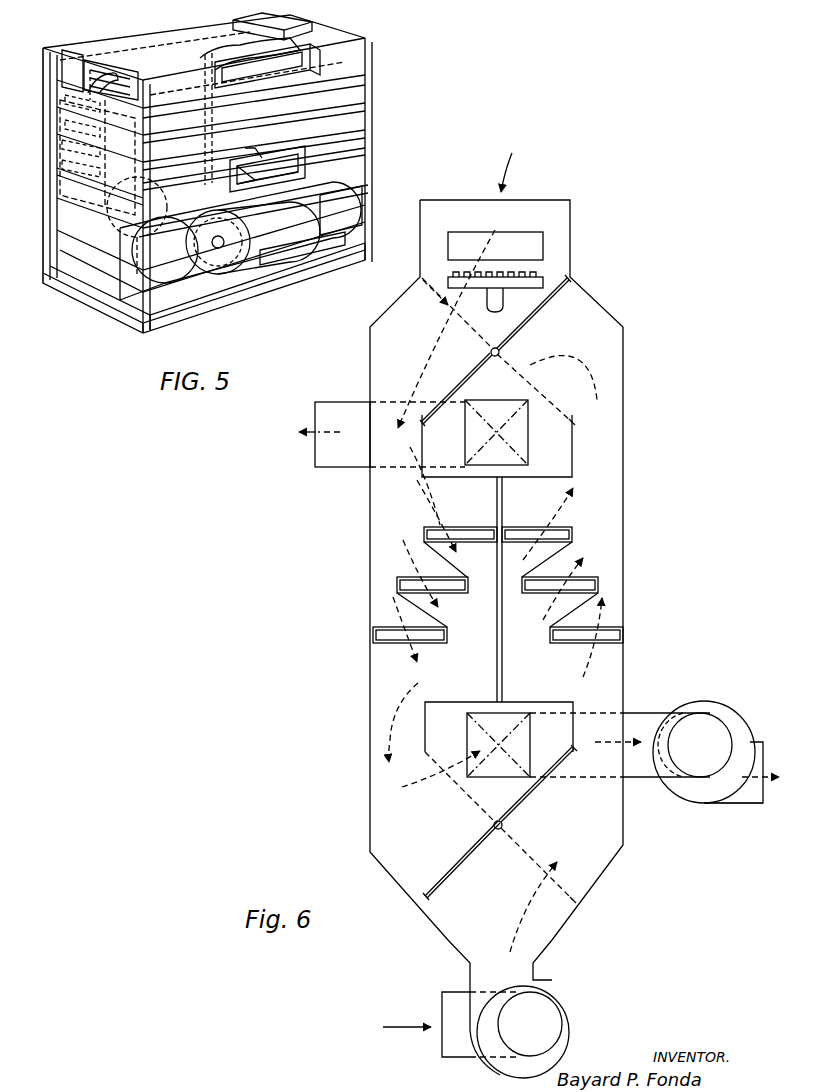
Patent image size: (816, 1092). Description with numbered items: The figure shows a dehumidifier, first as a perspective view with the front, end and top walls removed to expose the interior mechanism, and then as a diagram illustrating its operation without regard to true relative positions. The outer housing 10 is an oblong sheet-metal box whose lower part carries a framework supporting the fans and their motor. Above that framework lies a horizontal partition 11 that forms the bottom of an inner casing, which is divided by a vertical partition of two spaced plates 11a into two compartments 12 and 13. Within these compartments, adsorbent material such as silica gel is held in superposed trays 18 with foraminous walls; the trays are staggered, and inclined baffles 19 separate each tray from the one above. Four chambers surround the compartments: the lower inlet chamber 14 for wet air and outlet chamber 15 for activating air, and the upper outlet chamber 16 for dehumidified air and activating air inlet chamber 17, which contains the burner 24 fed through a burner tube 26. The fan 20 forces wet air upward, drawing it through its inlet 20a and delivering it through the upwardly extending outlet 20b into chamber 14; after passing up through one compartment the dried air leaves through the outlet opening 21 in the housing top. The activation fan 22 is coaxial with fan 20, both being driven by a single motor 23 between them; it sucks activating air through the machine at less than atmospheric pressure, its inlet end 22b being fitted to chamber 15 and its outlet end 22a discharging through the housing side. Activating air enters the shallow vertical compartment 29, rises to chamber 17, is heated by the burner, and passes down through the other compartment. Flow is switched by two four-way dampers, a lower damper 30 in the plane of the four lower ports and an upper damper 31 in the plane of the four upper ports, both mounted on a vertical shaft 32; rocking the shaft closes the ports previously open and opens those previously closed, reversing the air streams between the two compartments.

In FIG. 5, the outer housing 10 is at (358, 188).
In FIG. 5, the horizontal partition 11 is at (350, 173).
In FIG. 5, the vertical partition plates 11a is at (62, 167).
In FIG. 6, the vertical partition plates 11a is at (504, 674).
In FIG. 5, the compartment 12 is at (58, 65).
In FIG. 6, the compartment 12 is at (618, 506).
In FIG. 5, the compartment 13 is at (108, 176).
In FIG. 6, the compartment 13 is at (372, 511).
In FIG. 5, the inlet chamber 14 is at (308, 162).
In FIG. 6, the inlet chamber 14 is at (497, 438).
In FIG. 5, the outlet chamber 15 is at (60, 195).
In FIG. 5, the outlet chamber 16 is at (322, 62).
In FIG. 6, the outlet chamber 16 is at (495, 272).
In FIG. 5, the activating air inlet chamber 17 is at (62, 84).
In FIG. 5, the trays 18 is at (62, 107).
In FIG. 6, the trays 18 is at (463, 586).
In FIG. 5, the baffles 19 is at (60, 132).
In FIG. 6, the baffles 19 is at (437, 613).
In FIG. 5, the fan 20 is at (305, 272).
In FIG. 6, the fan 20 is at (556, 992).
In FIG. 5, the fan inlet 20a is at (345, 205).
In FIG. 6, the fan inlet 20a is at (441, 1009).
In FIG. 5, the fan housing outlet 20b is at (258, 162).
In FIG. 6, the fan housing outlet 20b is at (482, 980).
In FIG. 5, the outlet opening 21 is at (283, 19).
In FIG. 5, the activation fan 22 is at (220, 290).
In FIG. 6, the activation fan 22 is at (727, 710).
In FIG. 6, the fan outlet end 22a is at (722, 798).
In FIG. 5, the fan inlet end 22b is at (168, 308).
In FIG. 6, the fan inlet end 22b is at (654, 722).
In FIG. 5, the motor 23 is at (253, 290).
In FIG. 6, the burner 24 is at (548, 298).
In FIG. 5, the burner tube 26 is at (84, 62).
In FIG. 5, the vertical compartment 29 is at (60, 222).
In FIG. 5, the lower damper 30 is at (252, 210).
In FIG. 6, the lower damper 30 is at (458, 865).
In FIG. 5, the upper damper 31 is at (210, 52).
In FIG. 6, the upper damper 31 is at (466, 368).
In FIG. 6, the vertical shaft 32 is at (499, 353).